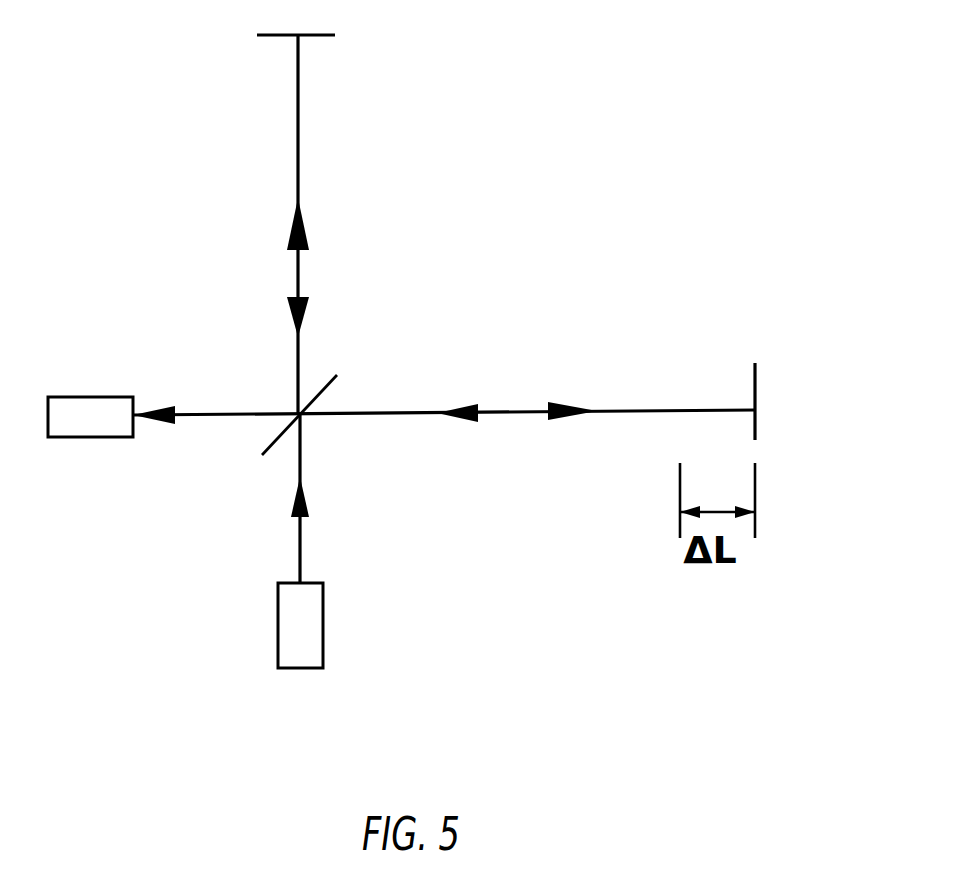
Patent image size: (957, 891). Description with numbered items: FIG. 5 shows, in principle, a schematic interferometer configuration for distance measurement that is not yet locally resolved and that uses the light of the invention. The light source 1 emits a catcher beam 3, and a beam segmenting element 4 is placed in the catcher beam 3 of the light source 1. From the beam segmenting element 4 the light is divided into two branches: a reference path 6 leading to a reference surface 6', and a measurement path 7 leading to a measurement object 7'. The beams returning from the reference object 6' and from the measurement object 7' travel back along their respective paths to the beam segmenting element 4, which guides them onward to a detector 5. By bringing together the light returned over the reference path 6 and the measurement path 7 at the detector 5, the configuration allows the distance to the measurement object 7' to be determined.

The light source 1 is at (342, 641).
The catcher beam 3 is at (300, 553).
The beam segmenting element 4 is at (267, 448).
The detector 5 is at (80, 410).
The reference path 6 is at (253, 225).
The reference surface 6' is at (231, 56).
The measurement path 7 is at (444, 463).
The measurement object 7' is at (813, 386).